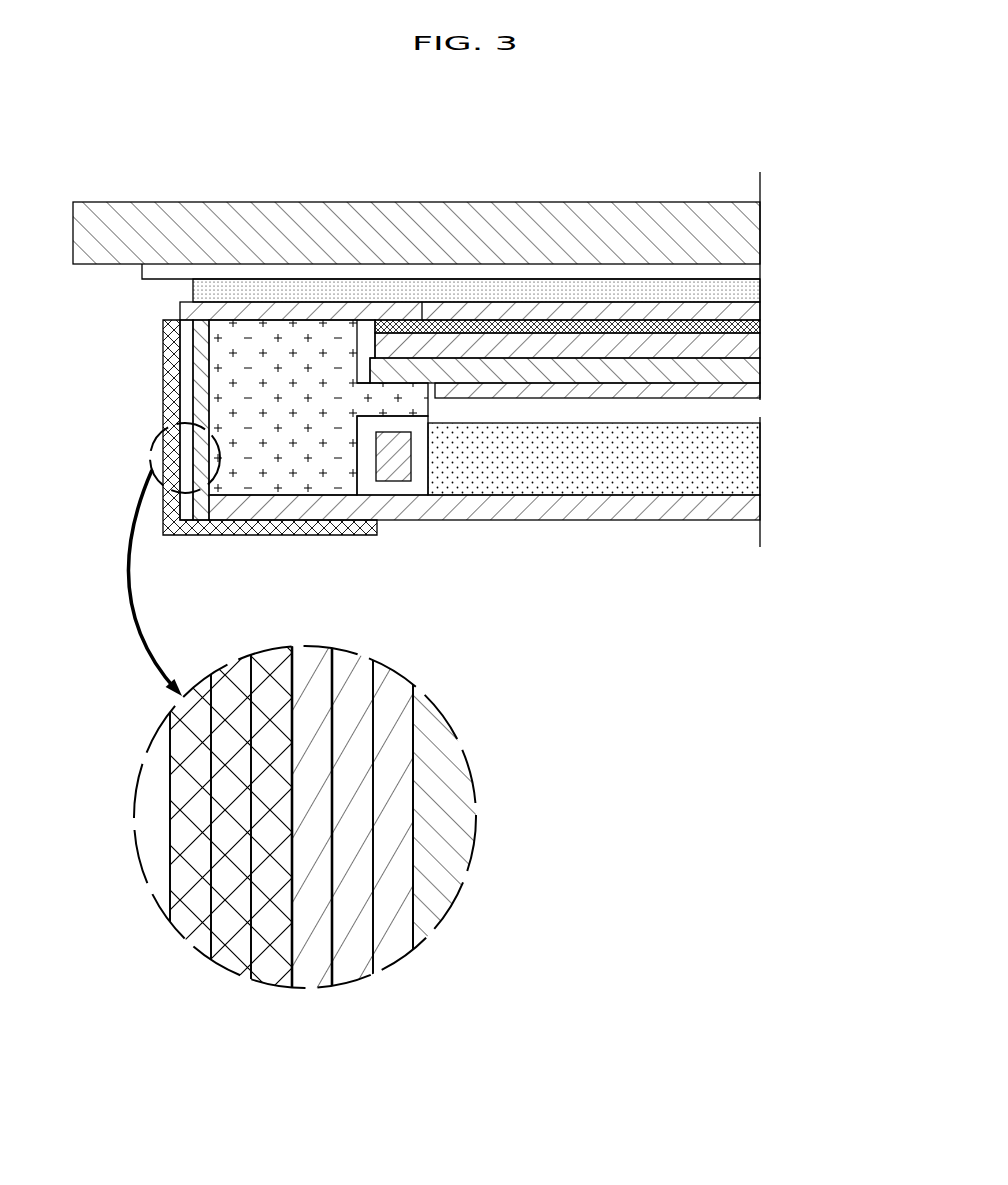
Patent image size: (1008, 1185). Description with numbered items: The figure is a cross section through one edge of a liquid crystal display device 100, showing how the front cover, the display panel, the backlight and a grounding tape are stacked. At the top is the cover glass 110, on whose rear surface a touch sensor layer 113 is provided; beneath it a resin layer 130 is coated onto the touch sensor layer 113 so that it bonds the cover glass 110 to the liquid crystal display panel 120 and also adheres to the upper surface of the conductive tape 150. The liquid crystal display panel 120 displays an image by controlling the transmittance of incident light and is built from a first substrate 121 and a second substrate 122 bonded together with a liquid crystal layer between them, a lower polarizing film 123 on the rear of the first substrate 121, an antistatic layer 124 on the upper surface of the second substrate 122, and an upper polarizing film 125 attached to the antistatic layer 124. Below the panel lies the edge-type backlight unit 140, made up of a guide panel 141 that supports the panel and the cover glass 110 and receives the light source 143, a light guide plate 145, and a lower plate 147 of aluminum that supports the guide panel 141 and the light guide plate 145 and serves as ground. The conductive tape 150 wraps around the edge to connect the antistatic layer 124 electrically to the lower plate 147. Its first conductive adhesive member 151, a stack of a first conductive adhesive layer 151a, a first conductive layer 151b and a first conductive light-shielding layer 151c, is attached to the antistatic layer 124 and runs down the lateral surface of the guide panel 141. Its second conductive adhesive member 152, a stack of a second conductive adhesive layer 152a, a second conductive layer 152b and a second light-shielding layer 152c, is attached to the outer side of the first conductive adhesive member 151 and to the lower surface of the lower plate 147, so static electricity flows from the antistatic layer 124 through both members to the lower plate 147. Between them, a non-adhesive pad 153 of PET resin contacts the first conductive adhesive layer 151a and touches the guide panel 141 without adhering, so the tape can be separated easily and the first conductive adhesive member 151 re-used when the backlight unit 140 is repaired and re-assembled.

The liquid crystal display device 100 is at (125, 136).
The cover glass 110 is at (753, 241).
The touch sensor layer 113 is at (753, 269).
The resin layer 130 is at (753, 290).
The liquid crystal display panel 120 is at (524, 354).
The upper polarizing film 125 is at (755, 313).
The antistatic layer 124 is at (757, 326).
The second substrate 122 is at (753, 348).
The first substrate 121 is at (753, 372).
The lower polarizing film 123 is at (628, 395).
The backlight unit 140 is at (484, 470).
The guide panel 141 is at (333, 470).
The light source 143 is at (400, 468).
The light guide plate 145 is at (473, 468).
The lower plate 147 is at (317, 586).
The conductive tape 150 is at (274, 722).
The first conductive adhesive member 151 is at (187, 377).
The first conductive adhesive layer 151a is at (393, 952).
The first conductive layer 151b is at (360, 963).
The first conductive light-shielding layer 151c is at (313, 965).
The second conductive adhesive member 152 is at (167, 403).
The second conductive adhesive layer 152a is at (268, 846).
The second conductive layer 152b is at (222, 972).
The second light-shielding layer 152c is at (190, 952).
The non-adhesive pad 153 is at (197, 349).